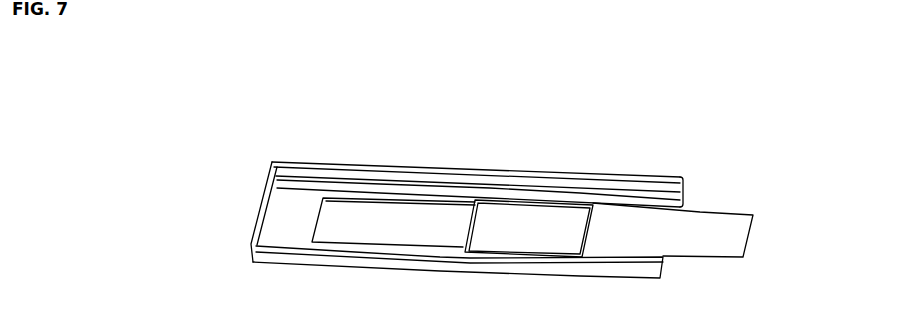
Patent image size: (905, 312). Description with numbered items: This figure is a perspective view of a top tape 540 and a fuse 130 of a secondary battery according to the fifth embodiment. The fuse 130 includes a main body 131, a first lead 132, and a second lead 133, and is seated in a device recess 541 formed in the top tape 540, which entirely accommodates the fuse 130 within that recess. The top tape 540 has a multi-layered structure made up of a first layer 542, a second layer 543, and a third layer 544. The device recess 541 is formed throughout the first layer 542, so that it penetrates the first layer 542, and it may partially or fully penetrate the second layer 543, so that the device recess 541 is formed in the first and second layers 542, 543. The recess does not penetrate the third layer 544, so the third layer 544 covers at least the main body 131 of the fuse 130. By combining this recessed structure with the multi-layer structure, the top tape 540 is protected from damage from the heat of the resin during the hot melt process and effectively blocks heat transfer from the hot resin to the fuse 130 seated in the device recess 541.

The fuse 130 is at (532, 159).
The main body 131 is at (526, 208).
The first lead 132 is at (432, 217).
The second lead 133 is at (673, 184).
The top tape 540 is at (466, 169).
The device recess 541 is at (275, 217).
The first layer 542 is at (280, 183).
The second layer 543 is at (347, 172).
The third layer 544 is at (297, 163).